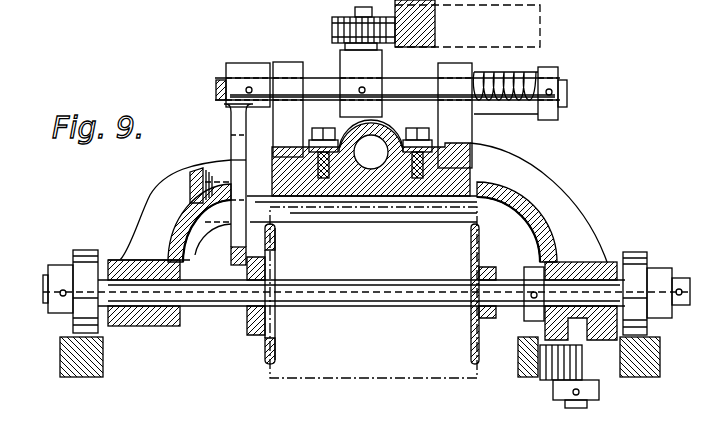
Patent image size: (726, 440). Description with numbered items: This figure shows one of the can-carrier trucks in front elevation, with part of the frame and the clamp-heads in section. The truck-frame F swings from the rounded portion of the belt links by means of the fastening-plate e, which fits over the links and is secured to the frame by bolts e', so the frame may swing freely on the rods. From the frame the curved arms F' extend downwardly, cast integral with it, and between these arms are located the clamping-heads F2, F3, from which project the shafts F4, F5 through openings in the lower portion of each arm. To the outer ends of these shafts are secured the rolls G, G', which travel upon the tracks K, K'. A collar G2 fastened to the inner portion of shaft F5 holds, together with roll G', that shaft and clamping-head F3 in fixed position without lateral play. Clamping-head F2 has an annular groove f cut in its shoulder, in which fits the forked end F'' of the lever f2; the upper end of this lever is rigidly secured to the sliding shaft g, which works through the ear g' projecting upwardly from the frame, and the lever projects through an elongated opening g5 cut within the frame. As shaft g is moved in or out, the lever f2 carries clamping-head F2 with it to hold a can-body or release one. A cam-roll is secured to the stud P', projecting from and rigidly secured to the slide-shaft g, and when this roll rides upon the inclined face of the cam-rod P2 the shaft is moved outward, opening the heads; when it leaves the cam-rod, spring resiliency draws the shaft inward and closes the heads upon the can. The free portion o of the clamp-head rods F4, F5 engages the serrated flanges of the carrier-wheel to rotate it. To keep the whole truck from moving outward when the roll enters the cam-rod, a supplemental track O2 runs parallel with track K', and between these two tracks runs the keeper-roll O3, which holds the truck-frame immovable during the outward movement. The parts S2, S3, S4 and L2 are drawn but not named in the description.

The free portion of the clamp-head rods o is at (190, 298).
The shaft g is at (387, 76).
The elongated opening g5 is at (225, 162).
The ear g' is at (290, 94).
The stud P' is at (320, 62).
The cam-rod P2 is at (432, 26).
The collar S2 is at (455, 64).
The spring S4 is at (500, 74).
The collar S3 is at (558, 72).
The lever f2 is at (231, 145).
The annular groove f is at (240, 330).
The truck-frame F is at (398, 172).
The fastening-plate e is at (373, 138).
The bolts e' is at (414, 149).
The curved arms F' is at (169, 211).
The forked end F'' is at (409, 204).
The drum L2 is at (365, 360).
The clamping-head F2 is at (274, 262).
The clamping-head F3 is at (472, 254).
The shaft F4 is at (165, 327).
The shaft F5 is at (520, 318).
The collar G2 is at (532, 266).
The roll G is at (67, 284).
The track K is at (79, 370).
The roll G' is at (656, 283).
The track K' is at (647, 370).
The supplemental track O2 is at (526, 378).
The keeper-roll O3 is at (552, 380).